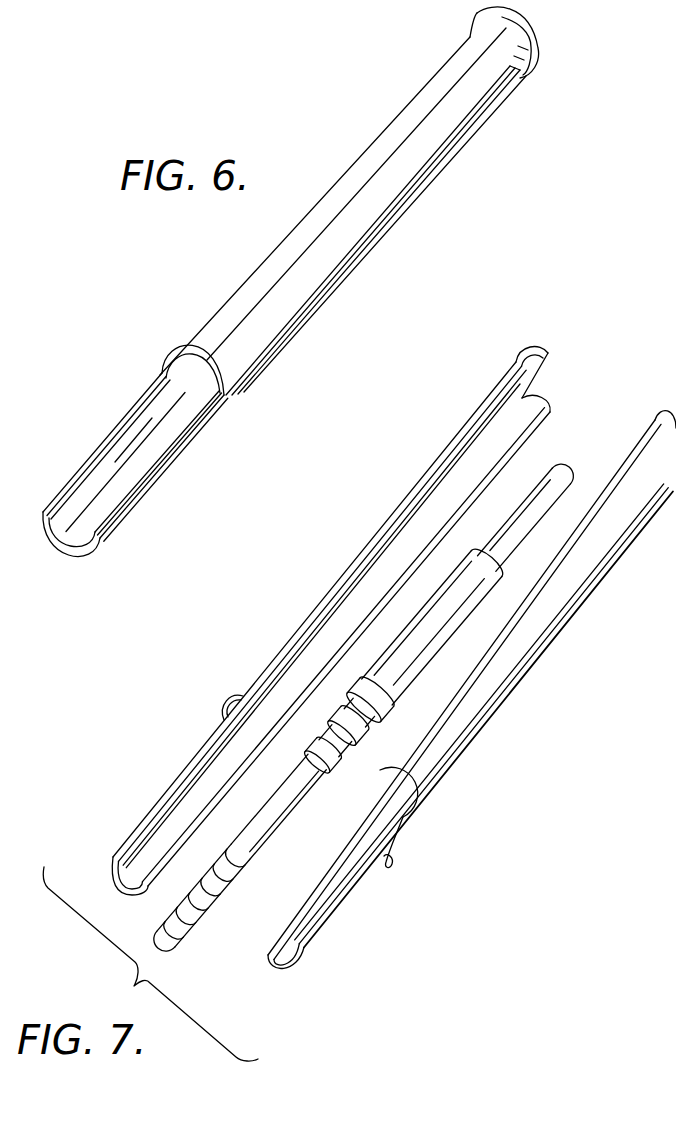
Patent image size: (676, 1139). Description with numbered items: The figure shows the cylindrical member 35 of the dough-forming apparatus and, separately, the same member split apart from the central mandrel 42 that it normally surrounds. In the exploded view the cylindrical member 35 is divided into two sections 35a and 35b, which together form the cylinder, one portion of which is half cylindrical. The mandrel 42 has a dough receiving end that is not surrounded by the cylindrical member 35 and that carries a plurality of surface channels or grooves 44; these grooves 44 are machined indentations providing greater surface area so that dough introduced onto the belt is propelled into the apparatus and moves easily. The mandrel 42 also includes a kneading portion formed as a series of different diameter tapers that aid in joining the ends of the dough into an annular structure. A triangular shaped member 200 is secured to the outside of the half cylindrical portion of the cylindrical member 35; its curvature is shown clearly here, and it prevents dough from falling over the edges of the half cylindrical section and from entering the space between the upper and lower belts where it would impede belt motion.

In FIG. 6, the cylindrical member 35 is at (413, 92).
In FIG. 6, the cylindrical member section 35a is at (385, 131).
In FIG. 7, the cylindrical member section 35a is at (380, 532).
In FIG. 6, the cylindrical member section 35b is at (412, 194).
In FIG. 7, the cylindrical member section 35b is at (541, 636).
In FIG. 7, the mandrel 42 is at (442, 577).
In FIG. 7, the surface channels or grooves 44 is at (218, 941).
In FIG. 7, the triangular shaped member 200 is at (388, 856).